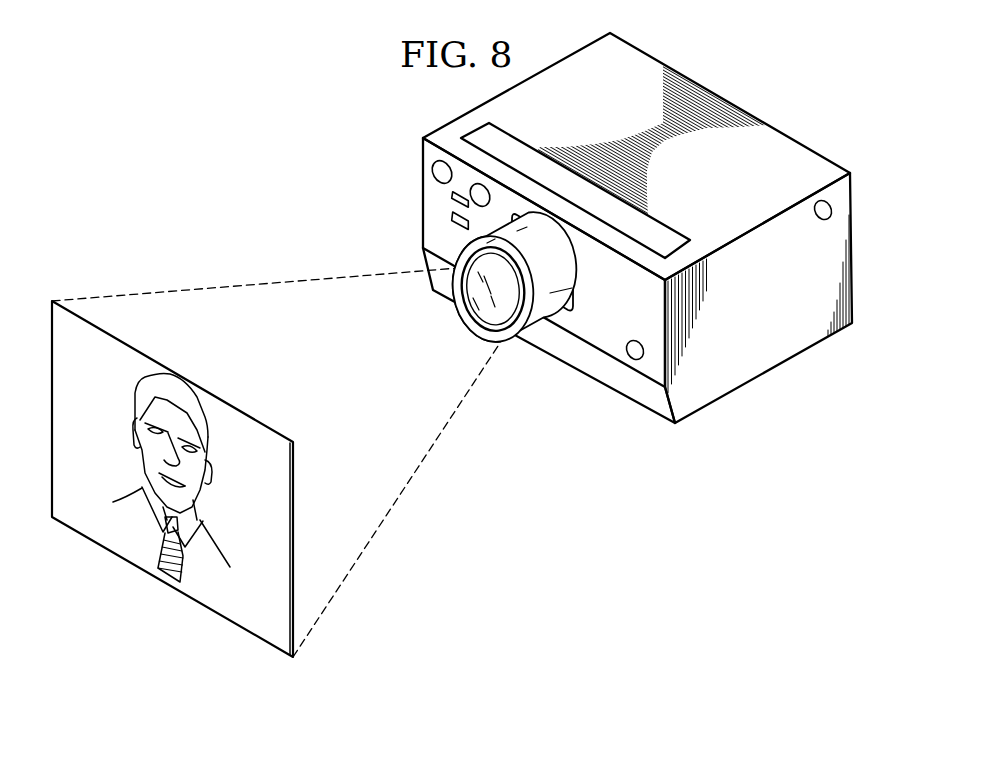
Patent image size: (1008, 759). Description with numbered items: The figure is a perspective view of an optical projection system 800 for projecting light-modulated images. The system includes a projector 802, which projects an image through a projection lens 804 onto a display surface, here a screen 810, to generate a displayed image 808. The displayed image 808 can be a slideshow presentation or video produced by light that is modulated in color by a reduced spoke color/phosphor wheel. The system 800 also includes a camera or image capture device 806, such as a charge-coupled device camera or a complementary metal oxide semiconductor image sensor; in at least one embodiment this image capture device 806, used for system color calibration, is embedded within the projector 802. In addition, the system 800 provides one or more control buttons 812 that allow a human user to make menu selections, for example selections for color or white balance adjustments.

The optical projection system 800 is at (287, 133).
The projector 802 is at (793, 139).
The projection lens 804 is at (472, 315).
The image capture device 806 is at (630, 340).
The displayed image 808 is at (137, 448).
The screen 810 is at (118, 547).
The control buttons 812 is at (822, 220).